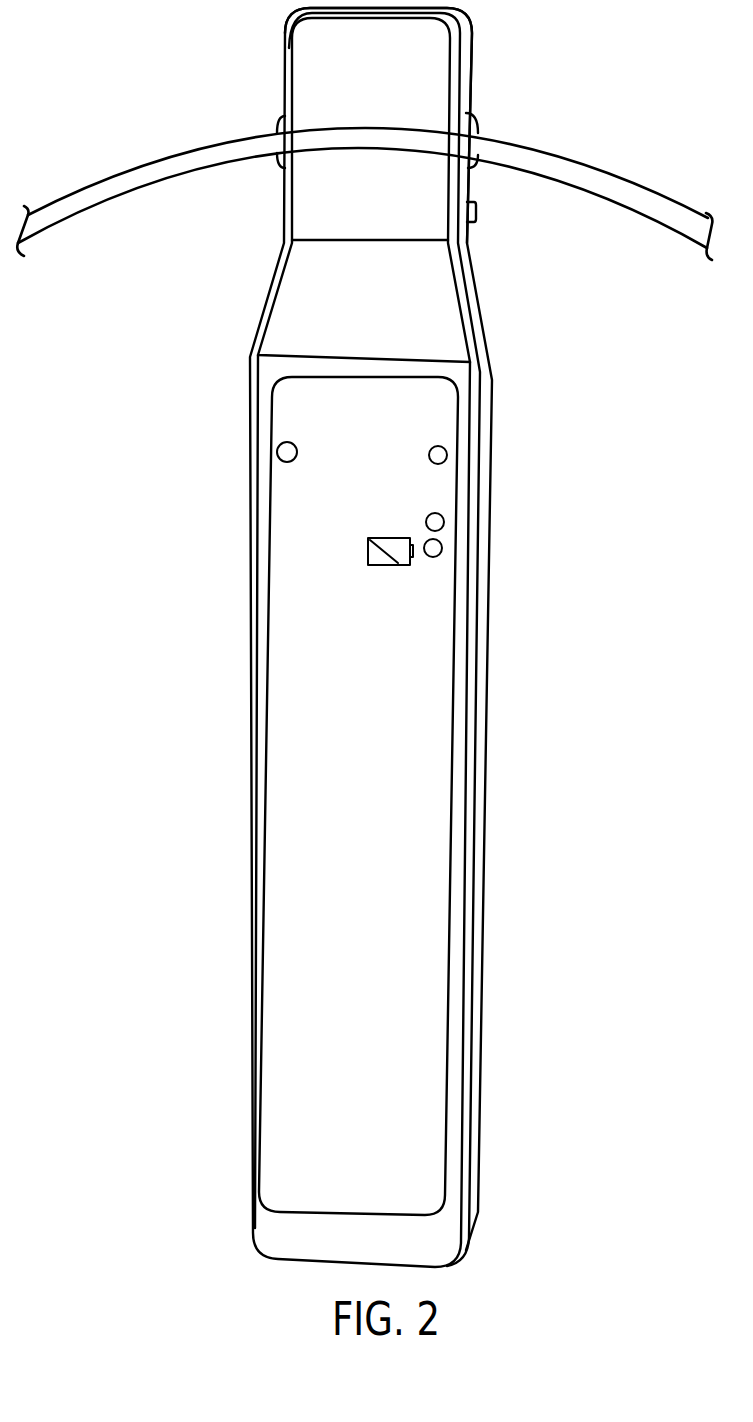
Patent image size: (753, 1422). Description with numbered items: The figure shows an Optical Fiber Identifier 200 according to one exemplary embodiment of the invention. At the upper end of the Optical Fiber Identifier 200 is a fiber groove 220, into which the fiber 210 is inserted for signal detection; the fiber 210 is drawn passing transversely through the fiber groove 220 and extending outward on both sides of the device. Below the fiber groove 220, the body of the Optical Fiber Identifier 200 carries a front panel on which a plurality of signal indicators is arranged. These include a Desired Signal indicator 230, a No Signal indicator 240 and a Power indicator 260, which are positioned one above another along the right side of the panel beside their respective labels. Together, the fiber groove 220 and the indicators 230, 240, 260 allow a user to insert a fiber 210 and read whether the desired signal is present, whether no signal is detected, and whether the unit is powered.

The Optical Fiber Identifier 200 is at (482, 832).
The fiber 210 is at (661, 207).
The fiber groove 220 is at (452, 128).
The Desired Signal indicator 230 is at (447, 457).
The No Signal indicator 240 is at (444, 523).
The Power indicator 260 is at (442, 549).